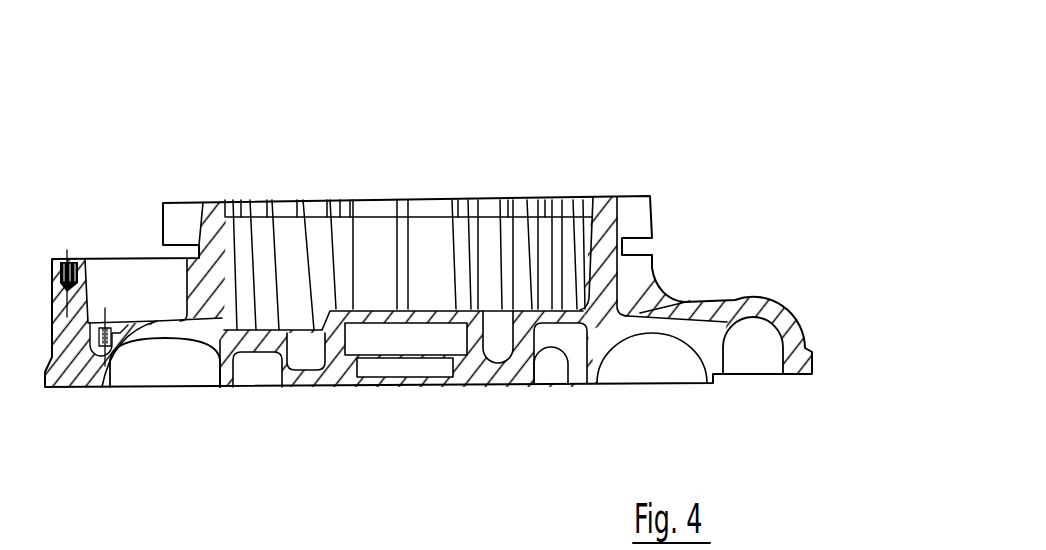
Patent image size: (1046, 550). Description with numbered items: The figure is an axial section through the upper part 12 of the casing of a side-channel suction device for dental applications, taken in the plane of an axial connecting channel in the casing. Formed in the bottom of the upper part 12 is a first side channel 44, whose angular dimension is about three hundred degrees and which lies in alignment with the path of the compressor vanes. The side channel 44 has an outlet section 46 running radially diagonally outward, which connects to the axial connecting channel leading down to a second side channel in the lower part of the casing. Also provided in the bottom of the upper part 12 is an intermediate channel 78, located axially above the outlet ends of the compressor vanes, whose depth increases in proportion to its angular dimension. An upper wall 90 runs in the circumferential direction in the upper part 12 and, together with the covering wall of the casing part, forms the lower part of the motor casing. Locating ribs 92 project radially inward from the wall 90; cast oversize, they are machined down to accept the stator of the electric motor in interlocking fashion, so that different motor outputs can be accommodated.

The upper part of the casing 12 is at (552, 192).
The first side channel 44 is at (158, 384).
The outlet section 46 is at (745, 373).
The intermediate channel 78 is at (560, 384).
The upper wall 90 is at (620, 309).
The locating ribs 92 is at (568, 243).